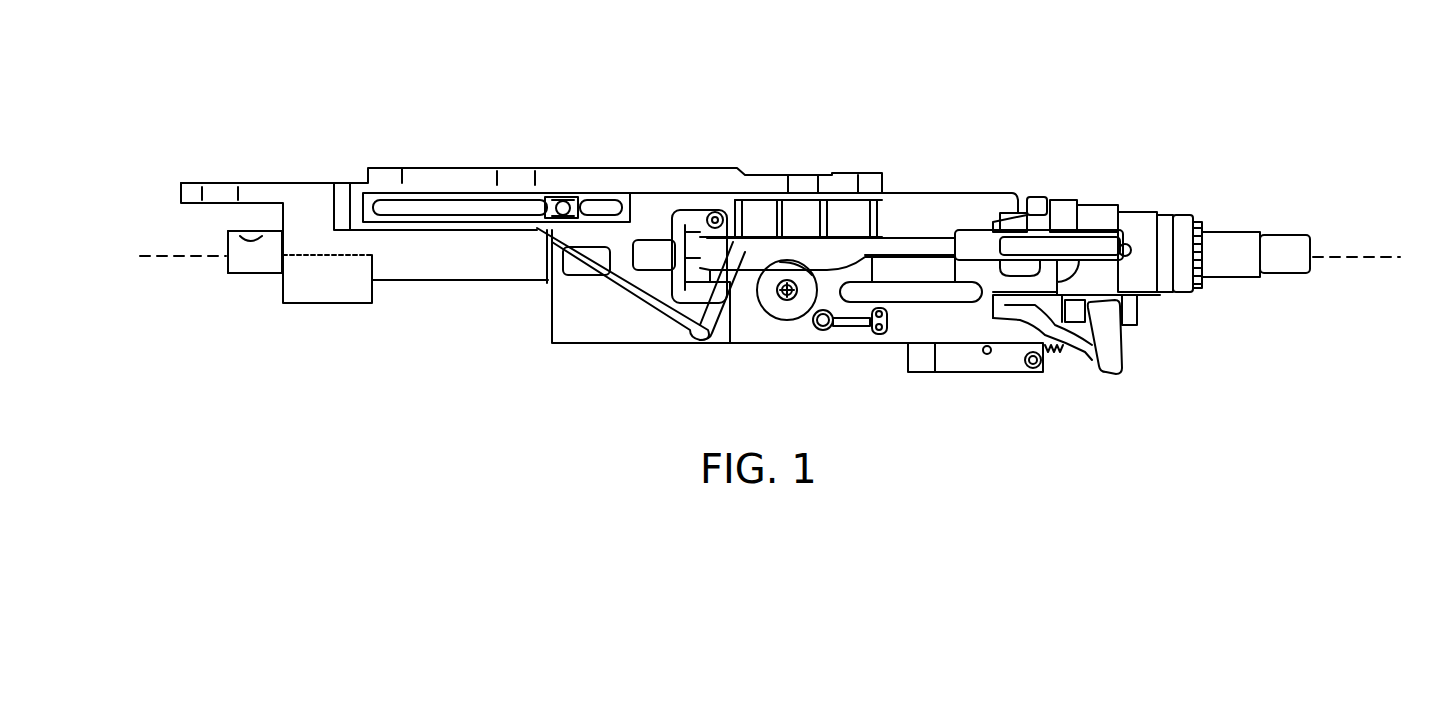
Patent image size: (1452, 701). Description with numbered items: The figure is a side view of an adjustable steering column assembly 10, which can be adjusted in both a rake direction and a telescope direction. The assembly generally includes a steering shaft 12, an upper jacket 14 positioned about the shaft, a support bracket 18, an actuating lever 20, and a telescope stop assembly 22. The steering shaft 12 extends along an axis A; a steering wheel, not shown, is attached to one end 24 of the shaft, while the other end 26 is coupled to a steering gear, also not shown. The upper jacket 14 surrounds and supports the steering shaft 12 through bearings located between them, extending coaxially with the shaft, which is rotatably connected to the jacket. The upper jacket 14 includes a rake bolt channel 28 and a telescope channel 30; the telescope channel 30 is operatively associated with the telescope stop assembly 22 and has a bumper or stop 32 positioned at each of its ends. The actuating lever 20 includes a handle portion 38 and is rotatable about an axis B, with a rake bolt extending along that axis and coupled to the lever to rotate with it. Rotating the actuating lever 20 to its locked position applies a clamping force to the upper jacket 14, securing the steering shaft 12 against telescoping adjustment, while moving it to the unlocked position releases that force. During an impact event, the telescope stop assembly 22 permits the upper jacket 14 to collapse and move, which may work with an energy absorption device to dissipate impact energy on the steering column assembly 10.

The adjustable steering column assembly 10 is at (912, 74).
The steering shaft 12 is at (1219, 230).
The upper jacket 14 is at (968, 193).
The support bracket 18 is at (779, 170).
The actuating lever 20 is at (1092, 238).
The telescope stop assembly 22 is at (799, 343).
The end of shaft 24 is at (1291, 233).
The other end of shaft 26 is at (236, 281).
The rake bolt channel 28 is at (923, 293).
The telescope channel 30 is at (852, 330).
The bumper or stop 32 is at (882, 336).
The handle portion 38 is at (1052, 236).
The axis A is at (1347, 262).
The axis B is at (787, 295).